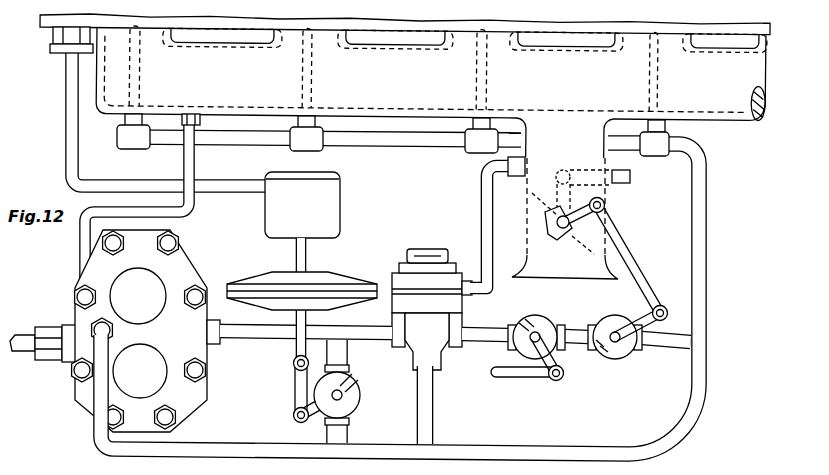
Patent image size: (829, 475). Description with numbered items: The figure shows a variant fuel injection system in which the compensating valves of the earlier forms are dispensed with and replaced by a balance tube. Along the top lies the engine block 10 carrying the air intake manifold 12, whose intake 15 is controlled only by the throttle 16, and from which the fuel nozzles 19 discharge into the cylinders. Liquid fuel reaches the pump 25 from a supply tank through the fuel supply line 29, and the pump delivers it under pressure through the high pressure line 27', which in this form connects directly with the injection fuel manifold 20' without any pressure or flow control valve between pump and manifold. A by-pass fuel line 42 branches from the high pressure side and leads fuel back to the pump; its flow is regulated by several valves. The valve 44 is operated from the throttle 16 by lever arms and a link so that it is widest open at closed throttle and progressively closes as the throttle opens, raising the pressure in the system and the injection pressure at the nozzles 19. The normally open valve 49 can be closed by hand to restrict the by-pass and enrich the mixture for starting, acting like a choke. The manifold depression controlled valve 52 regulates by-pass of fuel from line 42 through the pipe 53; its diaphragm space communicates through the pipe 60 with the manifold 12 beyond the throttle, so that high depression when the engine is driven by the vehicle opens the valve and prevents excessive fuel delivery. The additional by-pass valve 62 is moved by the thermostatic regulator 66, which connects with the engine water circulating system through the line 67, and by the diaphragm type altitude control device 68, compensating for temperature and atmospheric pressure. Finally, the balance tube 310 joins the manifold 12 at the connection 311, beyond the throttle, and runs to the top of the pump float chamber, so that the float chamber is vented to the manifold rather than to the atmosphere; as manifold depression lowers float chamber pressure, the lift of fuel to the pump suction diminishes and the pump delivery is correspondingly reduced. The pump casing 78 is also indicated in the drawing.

The engine block 10 is at (750, 26).
The air intake manifold 12 is at (380, 93).
The fuel nozzles 19 is at (316, 64).
The balance tube connection 311 is at (201, 121).
The water line 67 is at (146, 182).
The balance tube 310 is at (195, 164).
The injection fuel manifold 20' is at (396, 149).
The thermostatic regulator 66 is at (302, 205).
The pump 25 is at (196, 258).
The pump casing 78 is at (176, 390).
The fuel supply line 29 is at (30, 358).
The altitude control device 68 is at (287, 276).
The manifold depression controlled valve 52 is at (401, 261).
The pipe 60 is at (484, 217).
The intake 15 is at (560, 268).
The throttle 16 is at (533, 205).
The high pressure line 27' is at (422, 287).
The normally open valve 49 is at (538, 318).
The valve 44 is at (617, 318).
The by-pass fuel line 42 is at (255, 338).
The by-pass valve 62 is at (358, 397).
The pipe 53 is at (434, 408).